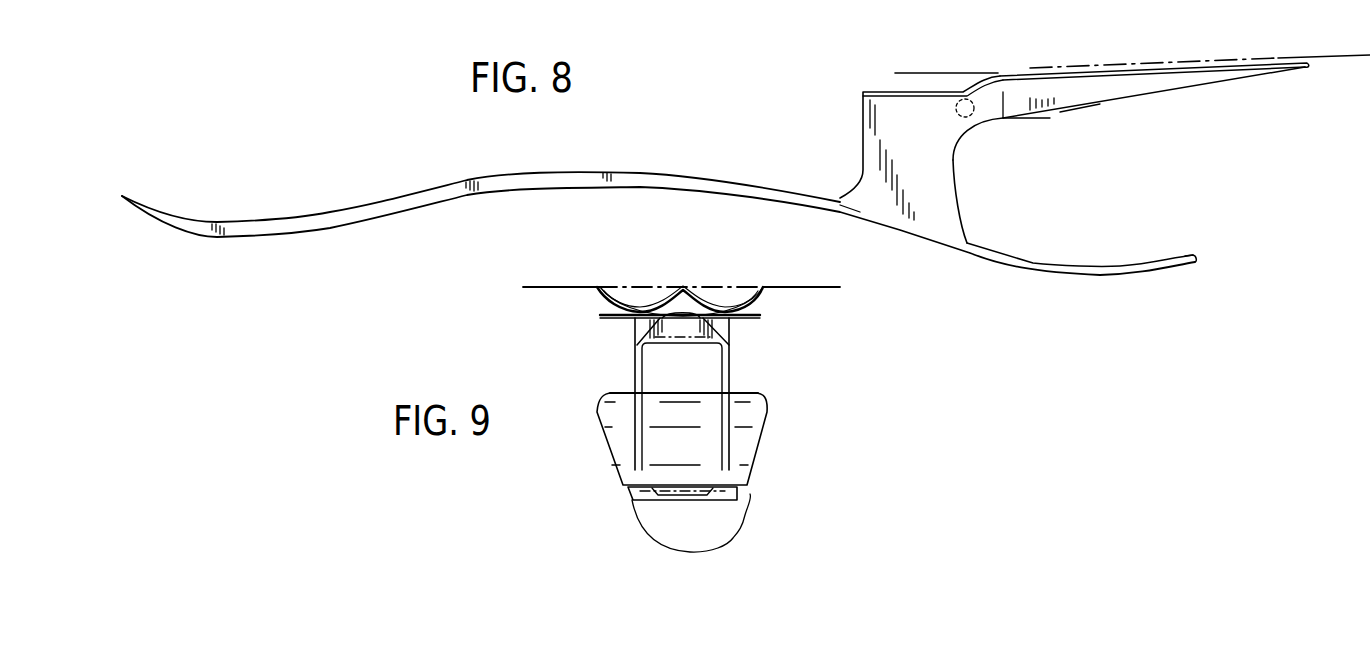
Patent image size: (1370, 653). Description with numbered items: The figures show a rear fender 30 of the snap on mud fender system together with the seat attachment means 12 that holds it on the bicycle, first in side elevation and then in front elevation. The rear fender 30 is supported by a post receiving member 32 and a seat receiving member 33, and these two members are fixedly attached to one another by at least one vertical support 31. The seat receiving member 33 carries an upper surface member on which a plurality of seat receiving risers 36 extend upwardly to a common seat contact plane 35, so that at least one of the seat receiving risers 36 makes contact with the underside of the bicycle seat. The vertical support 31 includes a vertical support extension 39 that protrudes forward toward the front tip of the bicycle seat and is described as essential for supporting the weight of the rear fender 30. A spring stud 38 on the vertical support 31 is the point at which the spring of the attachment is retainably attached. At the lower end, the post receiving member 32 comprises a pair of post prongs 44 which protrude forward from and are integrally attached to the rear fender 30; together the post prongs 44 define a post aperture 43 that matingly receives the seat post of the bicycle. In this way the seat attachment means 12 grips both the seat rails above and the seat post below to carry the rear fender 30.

In FIG. 8, the seat attachment means 12 is at (1268, 182).
In FIG. 9, the seat attachment means 12 is at (805, 418).
In FIG. 8, the rear fender 30 is at (217, 0).
In FIG. 9, the rear fender 30 is at (750, 452).
In FIG. 8, the vertical support 31 is at (927, 165).
In FIG. 9, the vertical support 31 is at (635, 372).
In FIG. 8, the post receiving member 32 is at (862, 222).
In FIG. 9, the seat receiving member 33 is at (766, 315).
In FIG. 8, the common seat contact plane 35 is at (1285, 58).
In FIG. 9, the common seat contact plane 35 is at (552, 284).
In FIG. 8, the seat receiving risers 36 is at (997, 77).
In FIG. 9, the seat receiving risers 36 is at (762, 290).
In FIG. 8, the spring stud 38 is at (947, 110).
In FIG. 8, the vertical support extension 39 is at (1065, 96).
In FIG. 9, the vertical support extension 39 is at (632, 330).
In FIG. 9, the post aperture 43 is at (667, 500).
In FIG. 8, the post prongs 44 is at (1193, 262).
In FIG. 9, the post prongs 44 is at (733, 538).